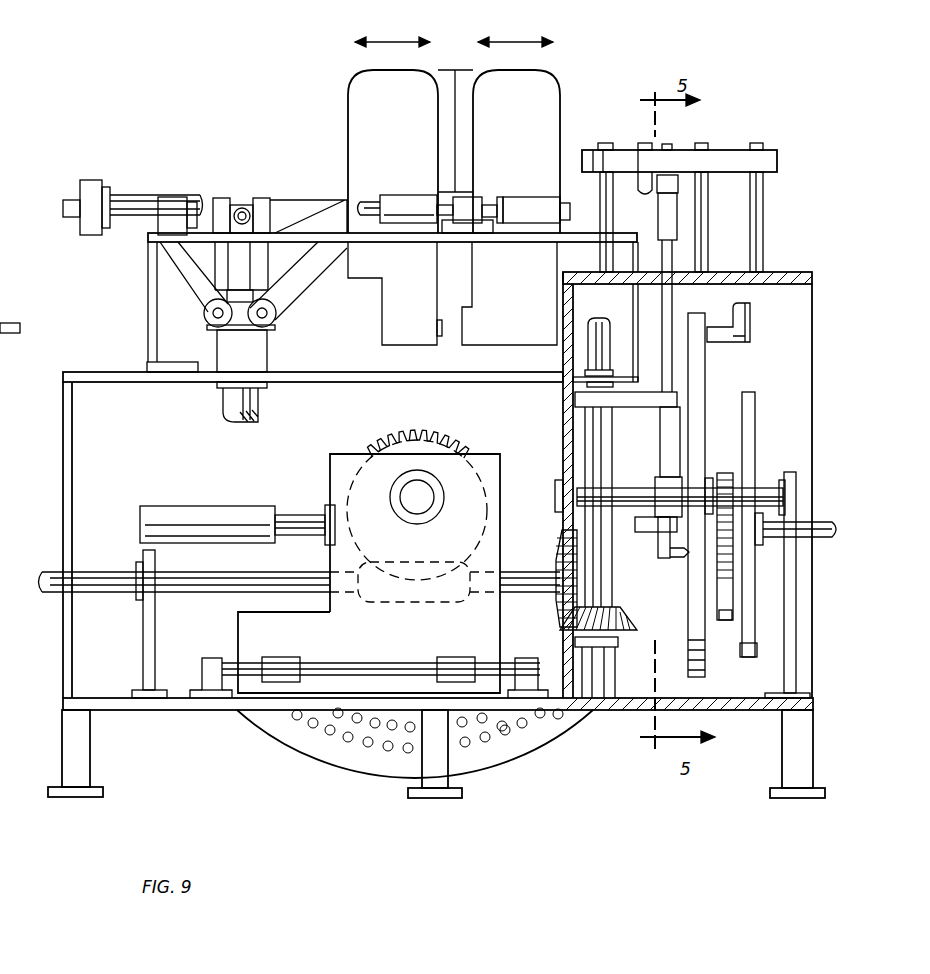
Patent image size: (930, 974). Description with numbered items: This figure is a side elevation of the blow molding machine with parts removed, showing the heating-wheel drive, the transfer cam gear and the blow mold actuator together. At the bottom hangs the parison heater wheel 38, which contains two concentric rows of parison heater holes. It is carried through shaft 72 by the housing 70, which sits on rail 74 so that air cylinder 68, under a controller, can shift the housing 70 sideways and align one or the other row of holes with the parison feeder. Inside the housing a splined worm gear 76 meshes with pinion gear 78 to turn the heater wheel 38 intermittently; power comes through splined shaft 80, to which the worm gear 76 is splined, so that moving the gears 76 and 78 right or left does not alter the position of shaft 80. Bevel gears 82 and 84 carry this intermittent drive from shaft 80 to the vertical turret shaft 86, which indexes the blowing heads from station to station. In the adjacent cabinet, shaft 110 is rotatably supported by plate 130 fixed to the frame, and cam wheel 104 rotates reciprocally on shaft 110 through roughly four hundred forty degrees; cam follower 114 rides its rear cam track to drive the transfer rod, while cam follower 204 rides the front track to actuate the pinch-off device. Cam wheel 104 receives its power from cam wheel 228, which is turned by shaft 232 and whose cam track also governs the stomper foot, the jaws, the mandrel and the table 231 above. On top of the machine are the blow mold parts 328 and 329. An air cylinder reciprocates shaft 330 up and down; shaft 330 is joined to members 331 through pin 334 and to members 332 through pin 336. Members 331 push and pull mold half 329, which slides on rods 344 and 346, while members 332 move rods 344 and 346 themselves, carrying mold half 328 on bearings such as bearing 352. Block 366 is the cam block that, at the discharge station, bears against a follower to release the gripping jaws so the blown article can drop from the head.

The parison heater wheel 38 is at (285, 738).
The air cylinder 68 is at (190, 506).
The housing 70 is at (390, 638).
The shaft 72 is at (420, 490).
The rail 74 is at (316, 663).
The splined worm gear 76 is at (430, 603).
The pinion gear 78 is at (418, 430).
The splined shaft 80 is at (188, 592).
The bevel gear 82 is at (558, 540).
The bevel gear 84 is at (626, 638).
The turret shaft 86 is at (606, 548).
The cam wheel 104 is at (707, 668).
The shaft 110 is at (616, 488).
The cam follower 114 is at (681, 558).
The plate 130 is at (664, 418).
The cam follower 204 is at (736, 344).
The cam wheel 228 is at (757, 426).
The table 231 is at (725, 150).
The shaft 232 is at (798, 506).
The blow mold part 328 is at (532, 111).
The blow mold part 329 is at (408, 111).
The shaft 330 is at (222, 400).
The member 331 is at (312, 286).
The member 332 is at (148, 241).
The pin 334 is at (273, 316).
The pin 336 is at (210, 315).
The rod 344 is at (372, 200).
The rod 346 is at (392, 205).
The bearing 352 is at (174, 197).
The block 366 is at (470, 200).